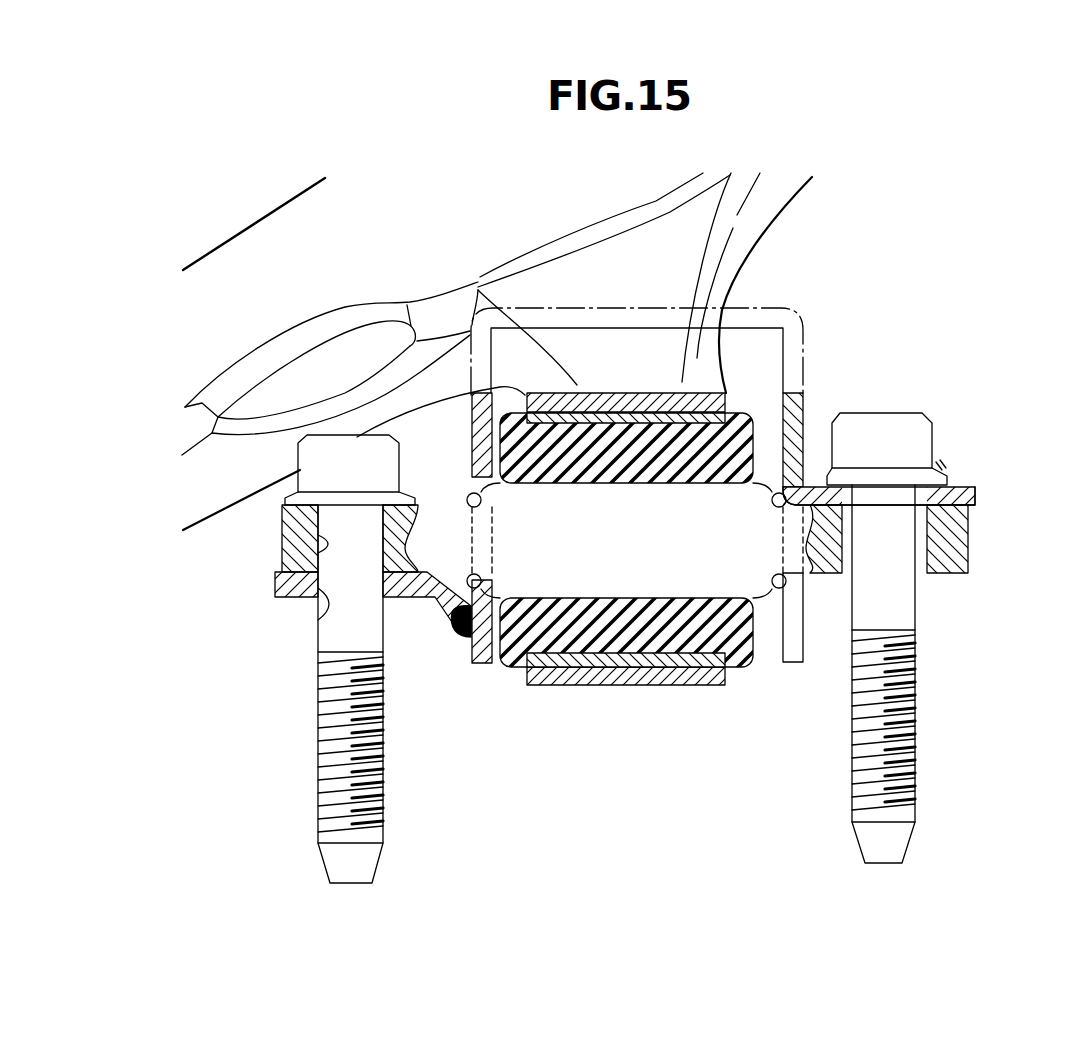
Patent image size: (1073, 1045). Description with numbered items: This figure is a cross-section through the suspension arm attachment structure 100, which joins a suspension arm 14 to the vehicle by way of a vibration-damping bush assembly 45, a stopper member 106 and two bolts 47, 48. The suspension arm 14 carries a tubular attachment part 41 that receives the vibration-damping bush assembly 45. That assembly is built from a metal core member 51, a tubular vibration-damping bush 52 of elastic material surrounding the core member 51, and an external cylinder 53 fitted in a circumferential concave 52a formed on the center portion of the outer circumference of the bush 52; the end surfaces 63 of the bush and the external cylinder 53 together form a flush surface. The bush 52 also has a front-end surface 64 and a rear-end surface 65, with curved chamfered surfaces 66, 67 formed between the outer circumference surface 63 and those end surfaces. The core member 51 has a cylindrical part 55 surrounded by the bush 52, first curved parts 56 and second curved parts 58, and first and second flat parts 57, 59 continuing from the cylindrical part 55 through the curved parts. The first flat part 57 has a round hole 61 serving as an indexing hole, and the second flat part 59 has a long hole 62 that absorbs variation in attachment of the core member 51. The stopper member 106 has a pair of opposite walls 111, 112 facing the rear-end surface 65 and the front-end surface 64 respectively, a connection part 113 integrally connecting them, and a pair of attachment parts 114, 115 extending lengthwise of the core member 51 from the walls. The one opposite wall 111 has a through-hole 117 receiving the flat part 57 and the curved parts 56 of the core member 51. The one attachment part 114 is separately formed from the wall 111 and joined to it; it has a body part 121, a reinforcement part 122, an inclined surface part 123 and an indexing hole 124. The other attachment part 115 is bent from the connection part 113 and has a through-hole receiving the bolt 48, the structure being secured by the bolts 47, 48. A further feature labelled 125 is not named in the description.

The suspension arm attachment structure 100 is at (153, 120).
The suspension arm 14 is at (253, 250).
The bolt 47 is at (343, 435).
The opposite wall 111 is at (477, 395).
The connection part 113 is at (613, 305).
The stopper member 106 is at (762, 300).
The opposite wall 112 is at (793, 393).
The reinforcement part 122 is at (425, 497).
The attachment part 115 is at (947, 490).
The bolt 48 is at (865, 440).
The long hole 62 is at (925, 537).
The flange edge 125 is at (922, 487).
The second flat part 59 is at (975, 492).
The cylindrical part 55 is at (660, 497).
The chamfered surface 66 is at (745, 410).
The vibration-damping bush assembly 45 is at (656, 597).
The external cylinder 53 is at (680, 690).
The vibration-damping bush 52 is at (723, 668).
The core member 51 is at (753, 667).
The first curved parts 56 is at (470, 573).
The second curved parts 58 is at (777, 572).
The through-hole 117 is at (503, 590).
The first flat part 57 is at (284, 522).
The round hole 61 is at (322, 546).
The body part 121 is at (277, 580).
The attachment part 114 is at (286, 604).
The indexing hole 124 is at (322, 620).
The inclined surface part 123 is at (427, 598).
The rear-end surface 65 is at (466, 641).
The chamfered surface 67 is at (490, 666).
The outer circumference surface 63 is at (728, 667).
The tubular attachment part 41 is at (598, 688).
The circumferential concave 52a is at (620, 688).
The front-end surface 64 is at (757, 635).